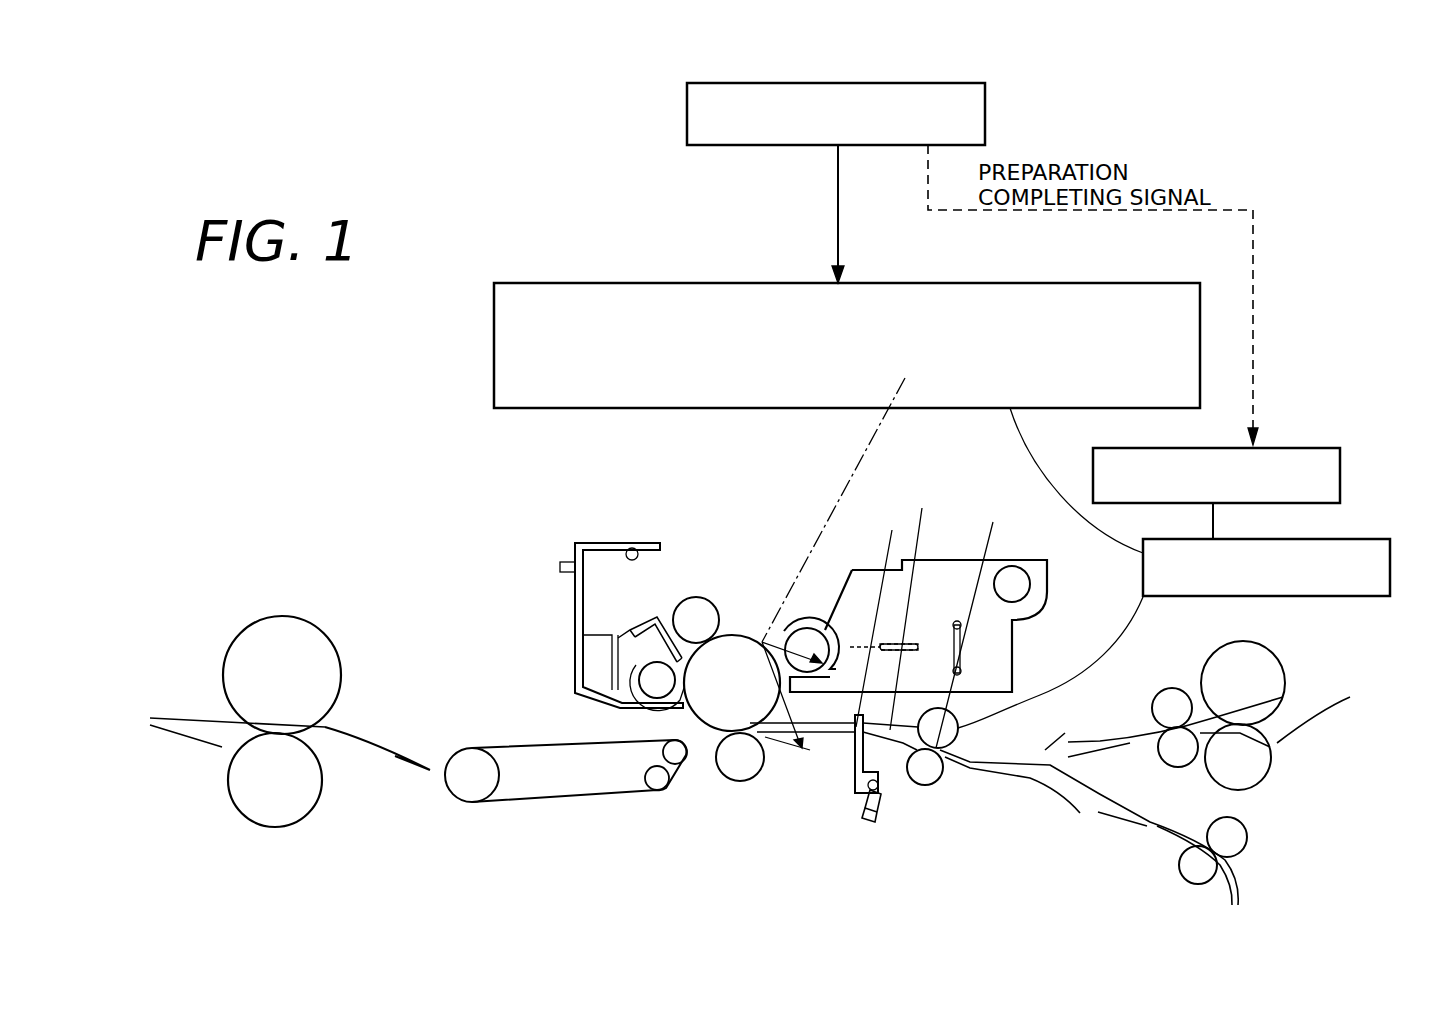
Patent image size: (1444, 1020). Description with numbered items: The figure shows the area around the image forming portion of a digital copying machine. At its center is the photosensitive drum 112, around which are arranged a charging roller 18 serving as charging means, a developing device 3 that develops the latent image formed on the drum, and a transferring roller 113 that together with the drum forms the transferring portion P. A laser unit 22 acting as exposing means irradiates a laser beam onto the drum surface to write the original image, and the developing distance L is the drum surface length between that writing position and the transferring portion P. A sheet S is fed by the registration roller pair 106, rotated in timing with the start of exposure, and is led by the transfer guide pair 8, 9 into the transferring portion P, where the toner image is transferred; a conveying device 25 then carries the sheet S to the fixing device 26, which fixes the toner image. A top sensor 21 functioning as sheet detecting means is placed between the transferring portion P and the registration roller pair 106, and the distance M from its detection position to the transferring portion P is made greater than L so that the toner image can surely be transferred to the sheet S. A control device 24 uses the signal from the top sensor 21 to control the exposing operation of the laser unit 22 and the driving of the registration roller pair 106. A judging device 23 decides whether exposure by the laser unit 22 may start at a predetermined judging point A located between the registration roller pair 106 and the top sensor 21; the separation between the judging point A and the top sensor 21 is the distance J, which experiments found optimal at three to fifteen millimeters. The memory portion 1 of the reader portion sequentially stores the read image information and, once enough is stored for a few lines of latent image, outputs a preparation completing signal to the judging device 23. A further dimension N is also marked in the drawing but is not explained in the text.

The memory portion 1 is at (960, 83).
The laser unit 22 is at (1122, 283).
The judging device 23 is at (1322, 448).
The control device 24 is at (1372, 539).
The charging roller 18 is at (690, 597).
The photosensitive drum 112 is at (724, 612).
The developing device 3 is at (808, 620).
The fixing device 26 is at (282, 616).
The conveying device 25 is at (522, 745).
The transferring roller 113 is at (727, 781).
The transfer guide 8 is at (823, 736).
The transfer guide 9 is at (843, 736).
The top sensor 21 is at (872, 822).
The registration roller pair 106 is at (942, 787).
The transferring portion P is at (720, 737).
The sheet S is at (1092, 787).
The developing distance L is at (800, 742).
The distance between sheet detection position and transferring portion M is at (740, 760).
The judging point A is at (895, 745).
The distance between judging point and top sensor J is at (862, 535).
The distance N is at (985, 524).